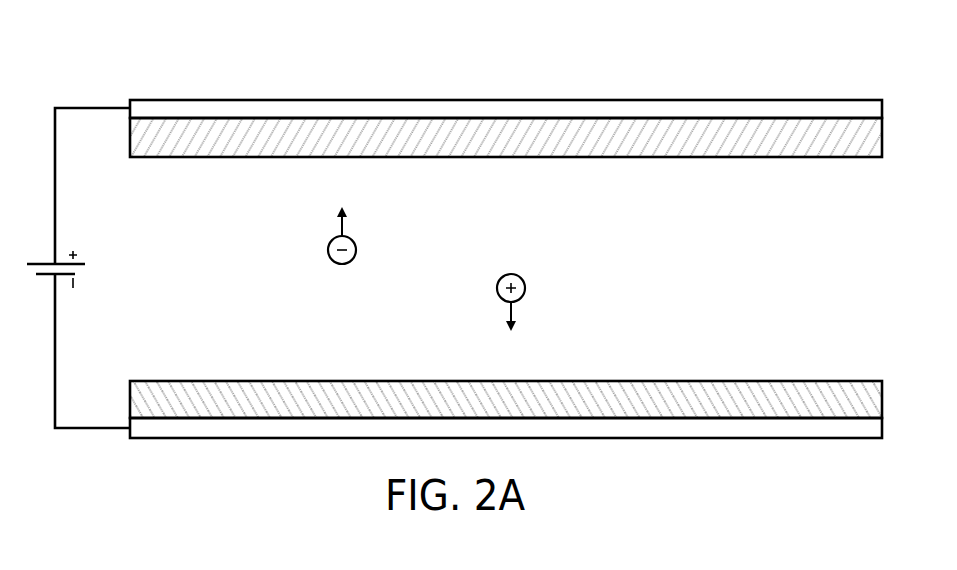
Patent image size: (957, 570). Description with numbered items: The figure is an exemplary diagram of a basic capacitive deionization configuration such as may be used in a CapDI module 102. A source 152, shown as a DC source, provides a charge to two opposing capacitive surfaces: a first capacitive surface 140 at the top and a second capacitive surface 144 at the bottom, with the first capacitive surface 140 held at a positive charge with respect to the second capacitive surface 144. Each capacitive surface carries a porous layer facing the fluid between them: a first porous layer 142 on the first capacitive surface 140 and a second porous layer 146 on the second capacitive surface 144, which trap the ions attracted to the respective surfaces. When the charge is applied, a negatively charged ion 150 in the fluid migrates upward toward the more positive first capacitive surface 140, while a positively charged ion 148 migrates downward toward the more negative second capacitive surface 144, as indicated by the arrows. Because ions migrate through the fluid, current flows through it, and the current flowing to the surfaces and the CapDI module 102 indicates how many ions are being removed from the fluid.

The CapDI module 102 is at (152, 54).
The first capacitive surface 140 is at (661, 110).
The first porous layer 142 is at (623, 142).
The second capacitive surface 144 is at (248, 428).
The second porous layer 146 is at (210, 395).
The positively charged ion 148 is at (525, 283).
The negatively charged ion 150 is at (328, 250).
The source 152 is at (102, 270).